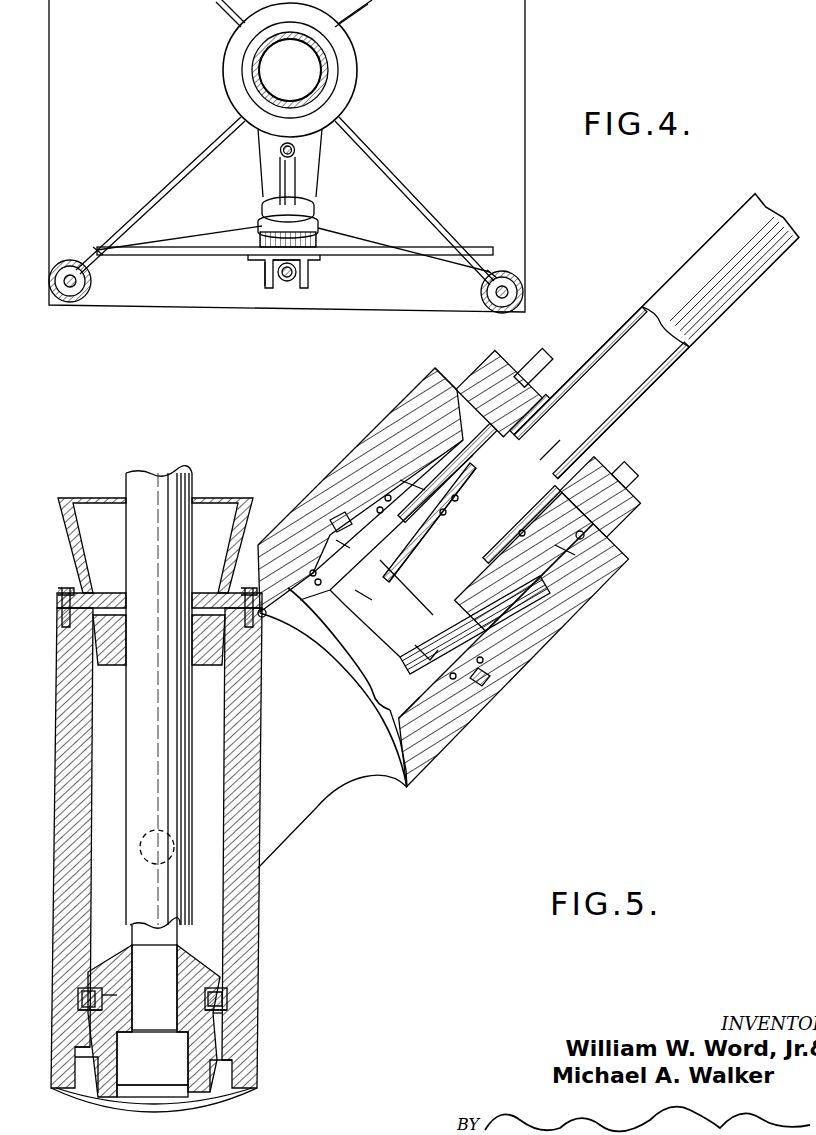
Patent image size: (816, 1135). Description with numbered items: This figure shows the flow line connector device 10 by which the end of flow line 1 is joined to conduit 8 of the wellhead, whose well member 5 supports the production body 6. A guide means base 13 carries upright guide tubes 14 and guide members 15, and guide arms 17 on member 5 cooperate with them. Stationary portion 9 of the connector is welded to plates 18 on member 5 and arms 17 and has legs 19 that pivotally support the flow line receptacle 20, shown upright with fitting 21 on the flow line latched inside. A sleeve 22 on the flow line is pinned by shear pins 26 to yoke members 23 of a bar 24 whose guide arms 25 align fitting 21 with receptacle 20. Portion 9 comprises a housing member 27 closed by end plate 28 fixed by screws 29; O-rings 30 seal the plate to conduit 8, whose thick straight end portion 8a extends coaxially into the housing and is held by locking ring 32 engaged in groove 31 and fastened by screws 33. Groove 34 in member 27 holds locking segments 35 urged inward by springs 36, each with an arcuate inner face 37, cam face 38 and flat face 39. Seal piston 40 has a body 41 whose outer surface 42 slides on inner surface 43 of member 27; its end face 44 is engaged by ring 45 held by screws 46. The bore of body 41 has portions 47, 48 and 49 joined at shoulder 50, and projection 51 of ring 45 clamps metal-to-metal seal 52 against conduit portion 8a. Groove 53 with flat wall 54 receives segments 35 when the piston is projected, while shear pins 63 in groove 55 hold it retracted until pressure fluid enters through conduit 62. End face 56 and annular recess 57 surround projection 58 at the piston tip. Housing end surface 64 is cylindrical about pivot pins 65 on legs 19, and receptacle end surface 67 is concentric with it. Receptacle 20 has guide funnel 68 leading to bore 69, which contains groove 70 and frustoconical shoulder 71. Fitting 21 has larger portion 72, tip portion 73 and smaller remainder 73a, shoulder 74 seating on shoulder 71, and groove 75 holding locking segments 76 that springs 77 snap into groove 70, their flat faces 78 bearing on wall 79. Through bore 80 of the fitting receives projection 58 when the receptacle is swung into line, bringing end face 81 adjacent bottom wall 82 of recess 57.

In FIG. 4, the flow line 1 is at (280, 284).
In FIG. 5, the flow line 1 is at (150, 487).
In FIG. 4, the well member 5 is at (337, 82).
In FIG. 4, the production body 6 is at (330, 66).
In FIG. 4, the conduit 8 is at (296, 172).
In FIG. 5, the conduit 8 is at (719, 318).
In FIG. 5, the end portion of conduit 8a is at (429, 522).
In FIG. 4, the stationary portion 9 is at (306, 212).
In FIG. 5, the stationary portion 9 is at (608, 603).
In FIG. 5, the flow line connector device 10 is at (382, 855).
In FIG. 4, the guide means base 13 is at (525, 22).
In FIG. 4, the guide tubes 14 is at (60, 268).
In FIG. 4, the guide member 15 is at (72, 290).
In FIG. 4, the guide arms 17 is at (170, 187).
In FIG. 4, the plates 18 is at (200, 160).
In FIG. 5, the legs 19 is at (322, 808).
In FIG. 5, the flow line receptacle 20 is at (262, 945).
In FIG. 5, the fitting 21 is at (200, 953).
In FIG. 4, the sleeve 22 is at (292, 296).
In FIG. 4, the yoke members 23 is at (310, 275).
In FIG. 4, the bar 24 is at (403, 256).
In FIG. 4, the guide arms 25 is at (97, 250).
In FIG. 4, the shear pins 26 is at (266, 270).
In FIG. 5, the housing member 27 is at (348, 462).
In FIG. 5, the end plate 28 is at (420, 392).
In FIG. 5, the screws 29 is at (456, 382).
In FIG. 5, the O-rings 30 is at (482, 466).
In FIG. 5, the annular groove 31 is at (568, 474).
In FIG. 5, the locking ring 32 is at (626, 510).
In FIG. 5, the screws 33 is at (636, 478).
In FIG. 5, the groove 34 is at (336, 524).
In FIG. 5, the locking segments 35 is at (378, 511).
In FIG. 5, the springs 36 is at (480, 685).
In FIG. 5, the arcuate inner face 37 is at (351, 571).
In FIG. 5, the cam face 38 is at (366, 526).
In FIG. 5, the flat face 39 is at (340, 543).
In FIG. 5, the seal piston 40 is at (494, 626).
In FIG. 5, the main body 41 is at (475, 625).
In FIG. 5, the outer cylindrical surface 42 is at (387, 496).
In FIG. 5, the inner cylindrical surface 43 is at (300, 600).
In FIG. 5, the end face 44 is at (560, 582).
In FIG. 5, the ring 45 is at (562, 540).
In FIG. 5, the screws 46 is at (567, 526).
In FIG. 5, the cylindrical bore portion 47 is at (457, 500).
In FIG. 5, the intermediate cylindrical bore portion 48 is at (418, 545).
In FIG. 5, the tip bore portion 49 is at (338, 650).
In FIG. 5, the shoulder 50 is at (369, 606).
In FIG. 5, the projection 51 is at (520, 540).
In FIG. 5, the metal-to-metal seal 52 is at (446, 514).
In FIG. 5, the groove 53 is at (398, 470).
In FIG. 5, the flat transverse wall 54 is at (410, 482).
In FIG. 5, the groove 55 is at (311, 570).
In FIG. 5, the end face 56 is at (315, 582).
In FIG. 5, the annular recess 57 is at (316, 602).
In FIG. 5, the projection 58 is at (372, 631).
In FIG. 5, the conduit 62 is at (545, 362).
In FIG. 5, the shear pins 63 is at (434, 690).
In FIG. 5, the end surface 64 is at (396, 770).
In FIG. 5, the pivot pins 65 is at (157, 830).
In FIG. 5, the end surface 67 is at (240, 1096).
In FIG. 5, the guide funnel 68 is at (72, 546).
In FIG. 5, the through bore 69 is at (93, 715).
In FIG. 5, the groove 70 is at (228, 1012).
In FIG. 5, the frustoconical shoulder 71 is at (214, 1010).
In FIG. 5, the larger portion 72 is at (220, 984).
In FIG. 5, the tip portion 73 is at (118, 1046).
In FIG. 5, the remainder of tip portion 73a is at (114, 1082).
In FIG. 5, the shoulder 74 is at (88, 1028).
In FIG. 5, the groove 75 is at (202, 998).
In FIG. 5, the locking segments 76 is at (102, 1012).
In FIG. 5, the springs 77 is at (118, 998).
In FIG. 5, the flat faces 78 is at (90, 986).
In FIG. 5, the wall 79 is at (80, 998).
In FIG. 5, the through bore 80 is at (154, 987).
In FIG. 5, the end face 81 is at (198, 1100).
In FIG. 5, the bottom wall 82 is at (426, 650).